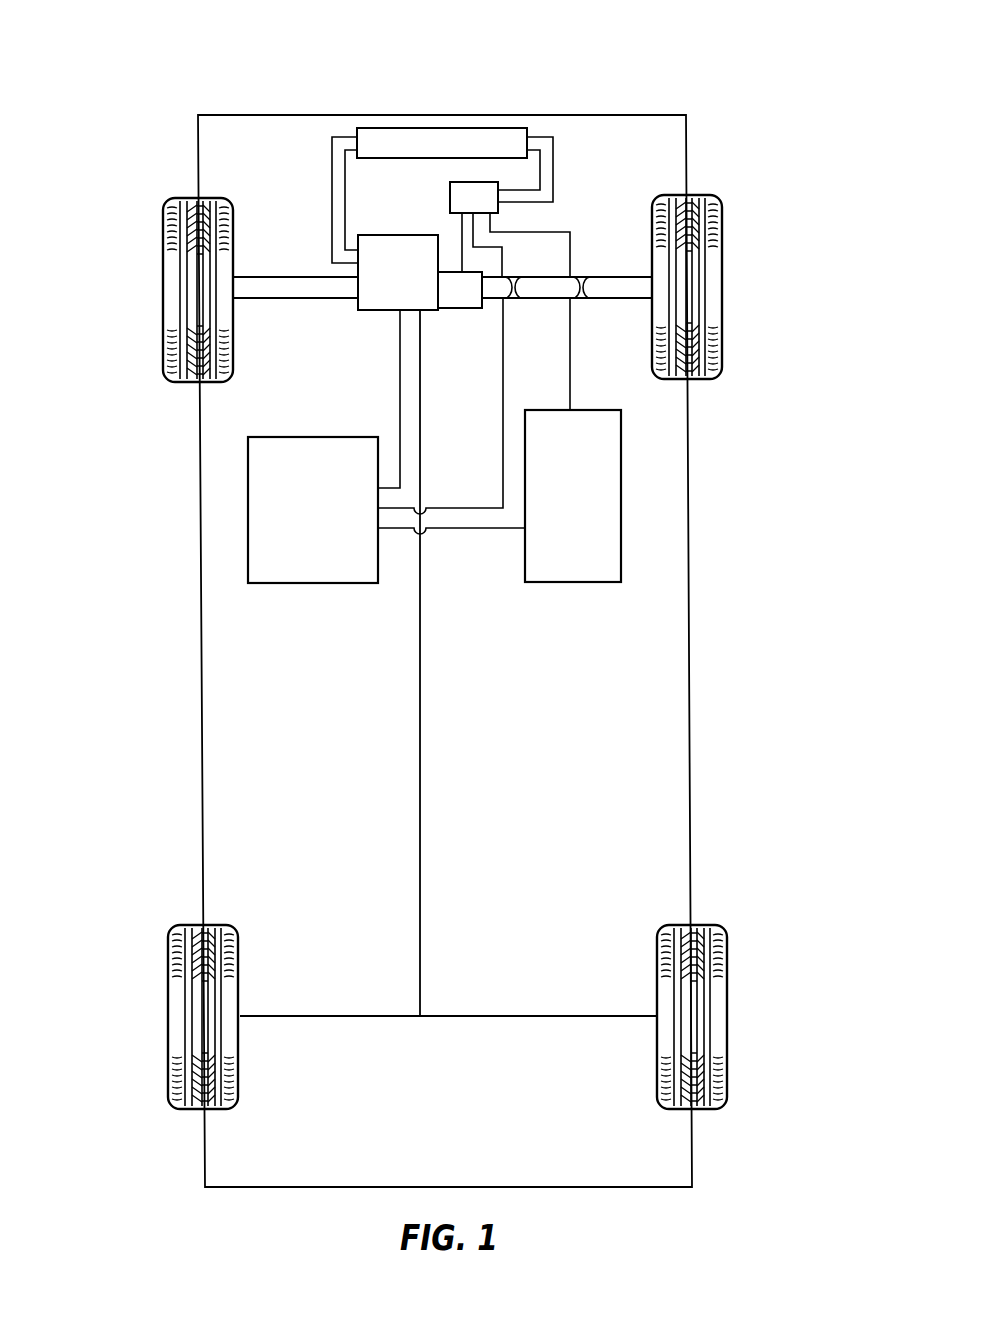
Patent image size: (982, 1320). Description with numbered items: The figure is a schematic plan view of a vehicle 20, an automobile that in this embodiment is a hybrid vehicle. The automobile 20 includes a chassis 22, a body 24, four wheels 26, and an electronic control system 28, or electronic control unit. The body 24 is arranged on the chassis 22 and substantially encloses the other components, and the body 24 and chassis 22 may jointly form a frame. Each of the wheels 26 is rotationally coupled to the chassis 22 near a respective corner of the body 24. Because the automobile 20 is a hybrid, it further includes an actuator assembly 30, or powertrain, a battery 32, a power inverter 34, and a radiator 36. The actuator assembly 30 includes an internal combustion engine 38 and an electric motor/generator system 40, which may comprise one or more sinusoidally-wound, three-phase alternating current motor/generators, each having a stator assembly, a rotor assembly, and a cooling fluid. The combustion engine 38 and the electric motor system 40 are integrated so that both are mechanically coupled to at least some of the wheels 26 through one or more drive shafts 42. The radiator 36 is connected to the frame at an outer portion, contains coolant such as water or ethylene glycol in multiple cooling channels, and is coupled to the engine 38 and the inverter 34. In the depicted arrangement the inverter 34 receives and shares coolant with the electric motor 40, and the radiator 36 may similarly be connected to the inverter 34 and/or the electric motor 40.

The vehicle 20 is at (454, 595).
The chassis 22 is at (420, 670).
The body 24 is at (200, 485).
The wheels 26 is at (163, 258).
The electronic control system 28 is at (386, 446).
The actuator assembly 30 is at (420, 320).
The battery 32 is at (573, 496).
The power inverter 34 is at (474, 348).
The radiator 36 is at (392, 128).
The internal combustion engine 38 is at (398, 272).
The electric motor/generator system 40 is at (440, 328).
The drive shafts 42 is at (297, 277).